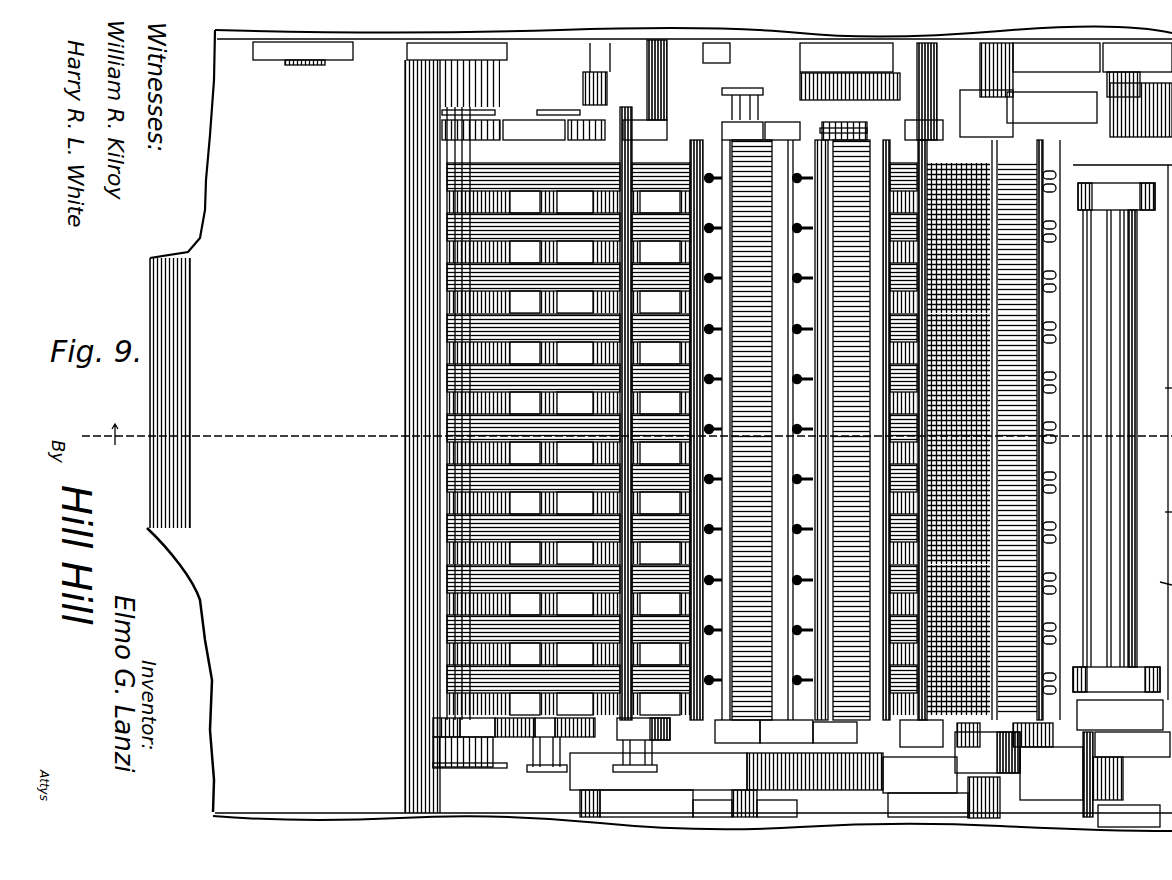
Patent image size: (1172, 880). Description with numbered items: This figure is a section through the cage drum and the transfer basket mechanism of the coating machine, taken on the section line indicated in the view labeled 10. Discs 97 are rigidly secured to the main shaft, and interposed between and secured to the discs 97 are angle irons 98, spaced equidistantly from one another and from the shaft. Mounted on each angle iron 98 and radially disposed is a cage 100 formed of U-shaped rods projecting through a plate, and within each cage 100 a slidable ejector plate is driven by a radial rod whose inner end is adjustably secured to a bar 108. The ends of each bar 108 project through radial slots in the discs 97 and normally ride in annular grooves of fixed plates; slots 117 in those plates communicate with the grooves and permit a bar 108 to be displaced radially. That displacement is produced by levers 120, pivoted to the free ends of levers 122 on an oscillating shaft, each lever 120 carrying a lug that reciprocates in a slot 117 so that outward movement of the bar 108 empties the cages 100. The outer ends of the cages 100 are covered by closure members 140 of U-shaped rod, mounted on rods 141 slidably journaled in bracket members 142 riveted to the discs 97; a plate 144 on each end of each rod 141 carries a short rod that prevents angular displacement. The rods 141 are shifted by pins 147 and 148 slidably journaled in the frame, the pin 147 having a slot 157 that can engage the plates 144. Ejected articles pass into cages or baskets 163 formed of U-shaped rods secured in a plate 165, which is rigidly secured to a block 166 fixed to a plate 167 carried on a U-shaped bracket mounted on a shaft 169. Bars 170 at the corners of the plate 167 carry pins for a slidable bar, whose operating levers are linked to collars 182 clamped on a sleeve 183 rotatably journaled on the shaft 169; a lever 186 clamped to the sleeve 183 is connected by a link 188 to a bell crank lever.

The center line marker 10 is at (115, 444).
The discs 97 is at (528, 113).
The angle irons 98 is at (775, 444).
The cages 100 is at (440, 570).
The bar 108 is at (786, 733).
The slots 117 is at (948, 80).
The levers 120 is at (1129, 815).
The levers 122 is at (1083, 783).
The closure members 140 is at (445, 300).
The rods 141 is at (445, 395).
The bracket members 142 is at (620, 732).
The plate 144 is at (735, 88).
The pin 147 is at (655, 62).
The pin 148 is at (905, 60).
The slot 157 is at (574, 113).
The cages or baskets 163 is at (1155, 382).
The plate 165 is at (1168, 295).
The block 166 is at (1155, 506).
The plate 167 is at (1155, 575).
The shaft 169 is at (1080, 712).
The bars 170 is at (1118, 740).
The collars 182 is at (1080, 197).
The sleeve 183 is at (1085, 572).
The lever 186 is at (1075, 72).
The link 188 is at (1075, 102).